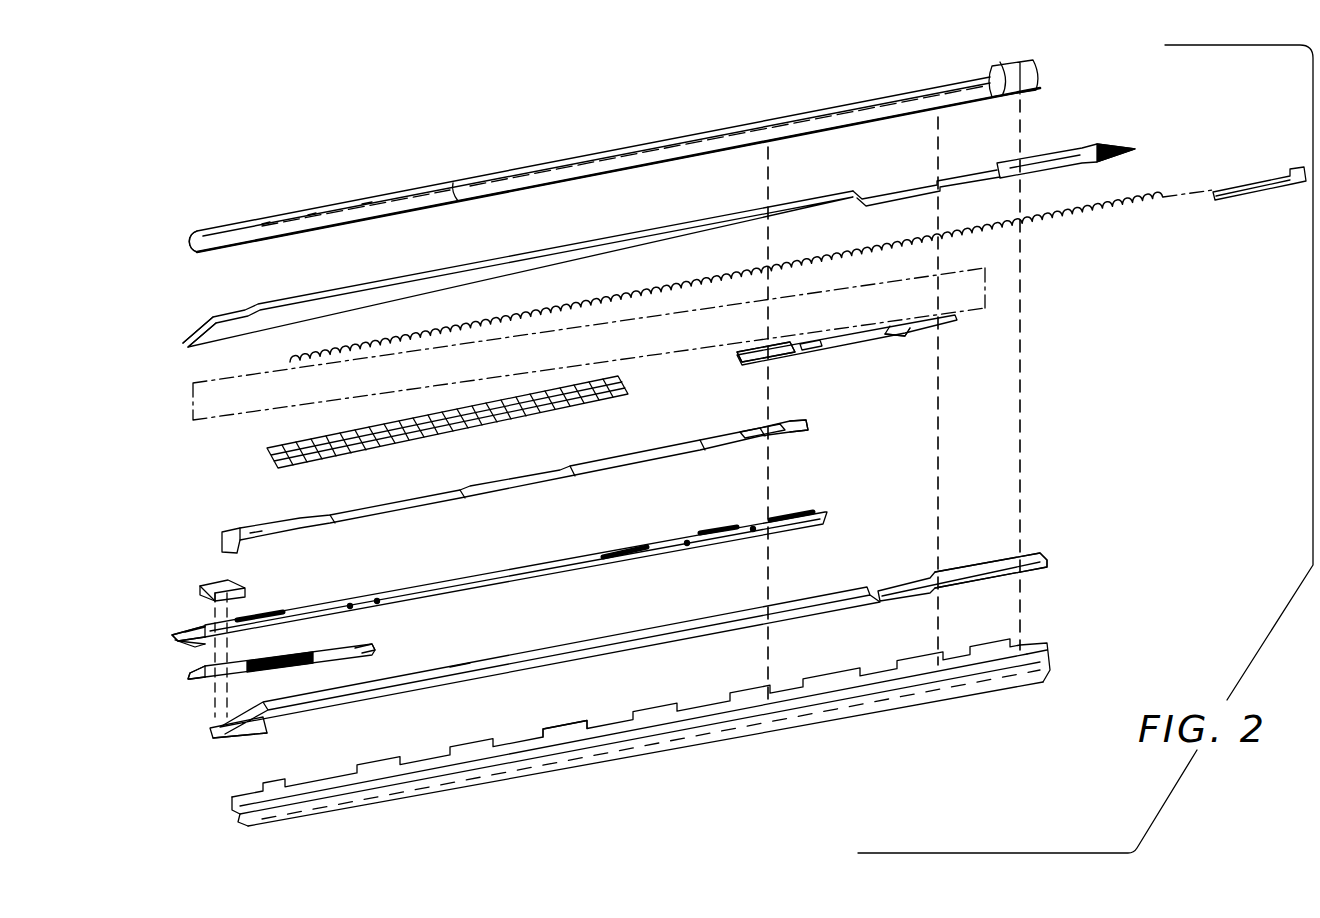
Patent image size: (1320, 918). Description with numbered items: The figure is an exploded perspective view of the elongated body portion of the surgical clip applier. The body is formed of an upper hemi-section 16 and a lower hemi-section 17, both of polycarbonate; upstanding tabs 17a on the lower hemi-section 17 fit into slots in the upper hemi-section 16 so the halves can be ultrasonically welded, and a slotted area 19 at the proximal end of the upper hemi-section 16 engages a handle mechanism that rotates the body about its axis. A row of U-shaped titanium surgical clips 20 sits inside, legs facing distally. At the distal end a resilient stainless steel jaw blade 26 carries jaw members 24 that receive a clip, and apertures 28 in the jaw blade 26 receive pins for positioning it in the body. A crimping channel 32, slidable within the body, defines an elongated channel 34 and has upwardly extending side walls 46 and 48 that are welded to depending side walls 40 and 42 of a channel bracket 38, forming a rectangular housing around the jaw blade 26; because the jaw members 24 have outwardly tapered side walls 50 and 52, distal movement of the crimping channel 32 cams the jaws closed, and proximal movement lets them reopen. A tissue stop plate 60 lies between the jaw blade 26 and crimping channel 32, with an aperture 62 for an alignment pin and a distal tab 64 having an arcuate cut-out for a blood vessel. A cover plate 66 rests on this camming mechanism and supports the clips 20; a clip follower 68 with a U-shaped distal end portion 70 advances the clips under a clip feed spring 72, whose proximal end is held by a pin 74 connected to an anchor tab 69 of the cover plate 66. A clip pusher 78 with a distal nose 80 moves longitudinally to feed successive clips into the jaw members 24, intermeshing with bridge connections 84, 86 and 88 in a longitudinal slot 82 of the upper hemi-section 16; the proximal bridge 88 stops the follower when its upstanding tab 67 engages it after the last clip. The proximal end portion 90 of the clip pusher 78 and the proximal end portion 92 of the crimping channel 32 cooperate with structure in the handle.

The upper hemi-section 16 is at (650, 146).
The lower hemi-section 17 is at (662, 742).
The upstanding tabs 17a is at (560, 718).
The slotted area 19 is at (1040, 76).
The surgical clips 20 is at (462, 425).
The jaw members 24 is at (172, 637).
The jaw blade 26 is at (482, 580).
The apertures 28 is at (640, 545).
The crimping channel 32 is at (576, 636).
The elongated channel 34 is at (457, 665).
The channel bracket 38 is at (218, 586).
The depending side wall 40 is at (202, 590).
The depending side wall 42 is at (247, 590).
The upwardly extending side wall 46 is at (262, 728).
The upwardly extending side wall 48 is at (268, 730).
The outwardly tapered side wall 50 is at (190, 643).
The outwardly tapered side wall 52 is at (185, 632).
The tissue stop plate 60 is at (345, 652).
The aperture 62 is at (360, 650).
The tab 64 is at (192, 678).
The cover plate 66 is at (568, 475).
The upstanding tab 67 is at (886, 333).
The clip follower 68 is at (855, 345).
The anchor tab 69 is at (808, 425).
The U-shaped distal end portion 70 is at (740, 365).
The clip feed spring 72 is at (638, 292).
The pin 74 is at (1245, 185).
The clip pusher 78 is at (650, 232).
The distal nose 80 is at (190, 335).
The longitudinal slot 82 is at (266, 220).
The bridge connection 84 is at (200, 233).
The bridge connection 86 is at (312, 210).
The proximal bridge 88 is at (372, 198).
The proximal end portion 90 is at (1105, 148).
The proximal end portion 92 is at (1035, 560).